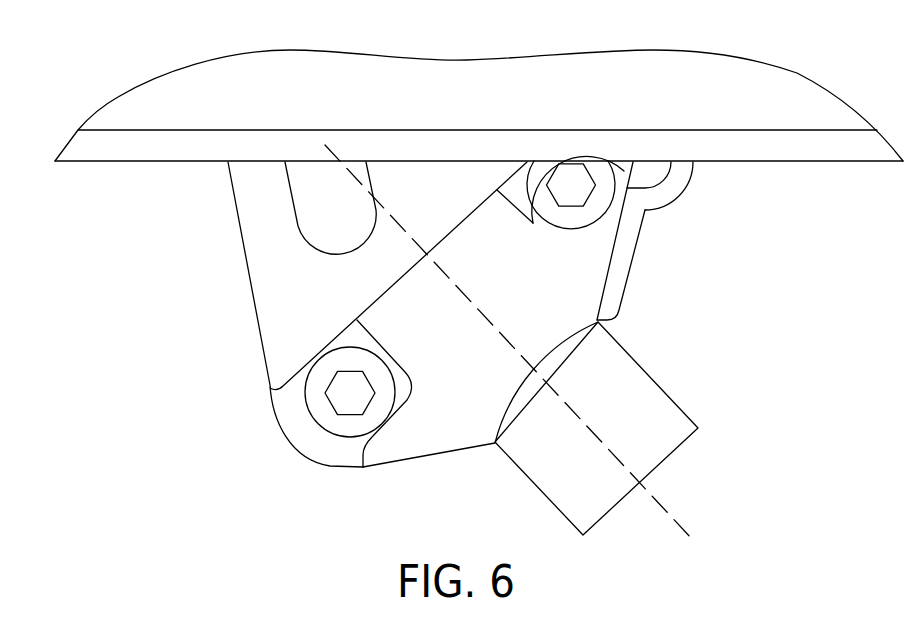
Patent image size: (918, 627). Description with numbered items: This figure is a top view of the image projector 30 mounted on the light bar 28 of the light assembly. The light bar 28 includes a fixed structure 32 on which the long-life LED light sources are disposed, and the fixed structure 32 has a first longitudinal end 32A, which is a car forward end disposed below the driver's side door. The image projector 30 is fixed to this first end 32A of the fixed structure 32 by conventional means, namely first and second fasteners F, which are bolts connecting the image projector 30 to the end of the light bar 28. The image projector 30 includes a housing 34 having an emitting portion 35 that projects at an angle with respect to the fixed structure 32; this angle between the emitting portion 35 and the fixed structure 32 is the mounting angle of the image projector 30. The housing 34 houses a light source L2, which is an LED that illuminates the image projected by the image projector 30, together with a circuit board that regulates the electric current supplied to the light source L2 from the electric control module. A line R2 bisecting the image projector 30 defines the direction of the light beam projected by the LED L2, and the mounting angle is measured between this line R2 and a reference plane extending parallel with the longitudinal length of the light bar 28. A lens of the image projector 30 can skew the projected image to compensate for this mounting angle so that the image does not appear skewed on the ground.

The image projector 30 is at (508, 94).
The light bar 28 is at (688, 191).
The fixed structure 32 is at (638, 235).
The first longitudinal end 32A is at (288, 438).
The housing 34 is at (607, 272).
The emitting portion 35 is at (648, 372).
The fasteners F is at (540, 220).
The light source L2 is at (677, 453).
The line bisecting the image projector R2 is at (679, 528).